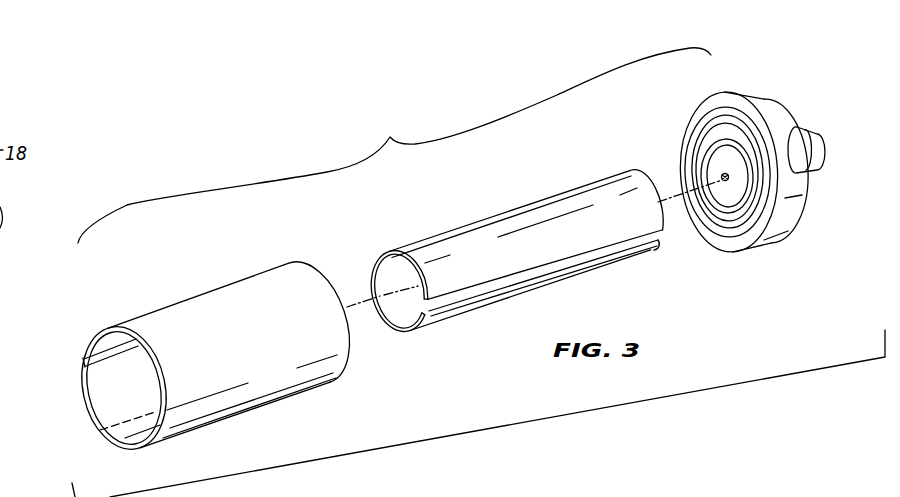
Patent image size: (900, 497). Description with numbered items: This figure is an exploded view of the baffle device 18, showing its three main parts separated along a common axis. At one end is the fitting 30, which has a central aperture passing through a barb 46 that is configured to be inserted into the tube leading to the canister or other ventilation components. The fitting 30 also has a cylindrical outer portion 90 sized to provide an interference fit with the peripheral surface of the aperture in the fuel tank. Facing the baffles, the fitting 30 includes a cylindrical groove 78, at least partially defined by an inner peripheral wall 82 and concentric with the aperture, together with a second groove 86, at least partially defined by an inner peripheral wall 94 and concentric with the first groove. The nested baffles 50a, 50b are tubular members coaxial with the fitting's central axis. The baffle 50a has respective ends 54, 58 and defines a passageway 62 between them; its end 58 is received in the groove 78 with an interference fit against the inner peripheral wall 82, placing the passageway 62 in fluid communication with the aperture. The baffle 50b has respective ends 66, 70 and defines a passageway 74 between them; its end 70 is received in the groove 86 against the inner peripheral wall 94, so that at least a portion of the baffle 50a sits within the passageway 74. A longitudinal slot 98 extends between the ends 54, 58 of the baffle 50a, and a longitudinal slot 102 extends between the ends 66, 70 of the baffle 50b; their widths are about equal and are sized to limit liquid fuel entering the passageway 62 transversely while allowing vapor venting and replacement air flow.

The baffle device 18 is at (394, 145).
The fitting 30 is at (746, 189).
The barb 46 is at (799, 127).
The baffle 50a is at (483, 243).
The baffle 50b is at (270, 377).
The end 54 is at (400, 333).
The end 58 is at (637, 163).
The passageway 62 is at (380, 284).
The end 66 is at (132, 447).
The end 70 is at (323, 278).
The passageway 74 is at (110, 403).
The cylindrical groove 78 is at (745, 205).
The inner peripheral wall 82 is at (698, 162).
The second groove 86 is at (752, 212).
The cylindrical outer portion 90 is at (752, 105).
The inner peripheral wall 94 is at (698, 137).
The longitudinal slot 98 is at (437, 312).
The longitudinal slot 102 is at (85, 354).